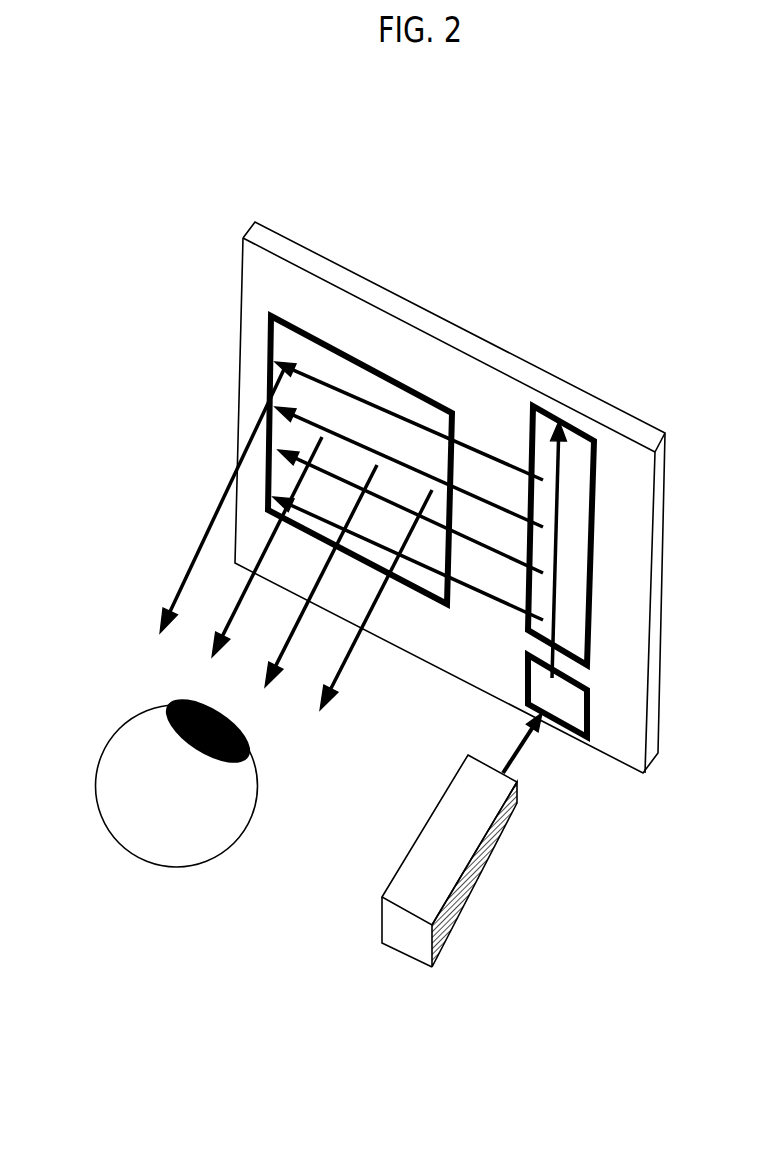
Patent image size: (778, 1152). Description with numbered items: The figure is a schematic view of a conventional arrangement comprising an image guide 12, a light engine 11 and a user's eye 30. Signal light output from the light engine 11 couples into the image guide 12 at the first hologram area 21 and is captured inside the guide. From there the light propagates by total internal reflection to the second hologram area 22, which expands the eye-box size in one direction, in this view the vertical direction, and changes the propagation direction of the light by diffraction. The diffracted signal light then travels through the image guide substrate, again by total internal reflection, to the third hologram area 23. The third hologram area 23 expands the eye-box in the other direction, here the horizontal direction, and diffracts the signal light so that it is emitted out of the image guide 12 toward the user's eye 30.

The light engine 11 is at (402, 947).
The image guide 12 is at (323, 258).
The first hologram area 21 is at (590, 699).
The second hologram area 22 is at (597, 544).
The third hologram area 23 is at (353, 362).
The user's eye 30 is at (123, 850).